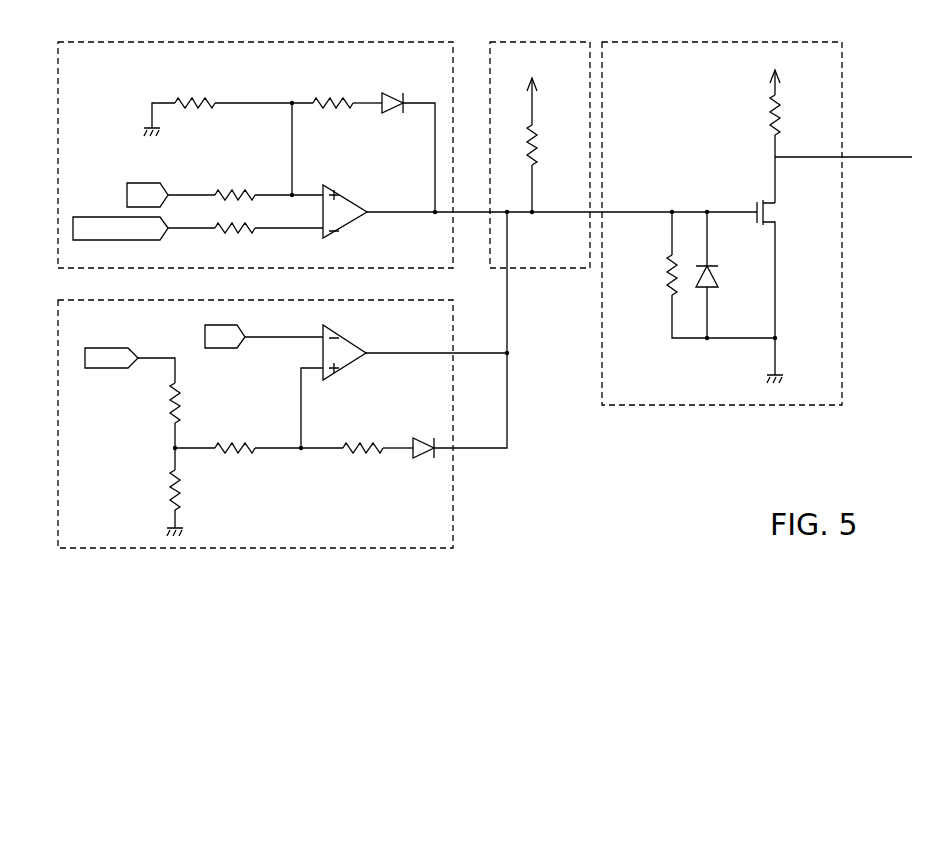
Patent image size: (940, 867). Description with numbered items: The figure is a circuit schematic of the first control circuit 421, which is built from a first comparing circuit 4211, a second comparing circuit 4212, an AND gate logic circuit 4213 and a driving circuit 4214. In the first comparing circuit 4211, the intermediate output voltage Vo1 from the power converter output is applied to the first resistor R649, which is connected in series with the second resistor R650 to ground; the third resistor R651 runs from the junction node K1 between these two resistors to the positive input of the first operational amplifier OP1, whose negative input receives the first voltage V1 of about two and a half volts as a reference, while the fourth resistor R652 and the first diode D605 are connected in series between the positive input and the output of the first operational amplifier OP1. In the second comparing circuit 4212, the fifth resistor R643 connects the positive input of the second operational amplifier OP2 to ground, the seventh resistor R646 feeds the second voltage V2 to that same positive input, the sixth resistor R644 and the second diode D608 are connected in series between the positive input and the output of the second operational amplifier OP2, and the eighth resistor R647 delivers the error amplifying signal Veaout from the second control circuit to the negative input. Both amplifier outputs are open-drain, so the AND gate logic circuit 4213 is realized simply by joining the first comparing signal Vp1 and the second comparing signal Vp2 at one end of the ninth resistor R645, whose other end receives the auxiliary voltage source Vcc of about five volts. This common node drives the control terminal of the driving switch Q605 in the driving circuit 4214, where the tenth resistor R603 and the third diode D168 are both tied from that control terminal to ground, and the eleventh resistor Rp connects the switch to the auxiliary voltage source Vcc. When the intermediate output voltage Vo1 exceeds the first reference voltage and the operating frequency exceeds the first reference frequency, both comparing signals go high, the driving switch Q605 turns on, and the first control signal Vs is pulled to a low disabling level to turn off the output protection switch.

The first control circuit 421 is at (916, 61).
The first comparing circuit 4211 is at (453, 517).
The second comparing circuit 4212 is at (258, 42).
The AND gate logic circuit 4213 is at (566, 42).
The driving circuit 4214 is at (723, 42).
The fifth resistor R643 is at (228, 106).
The sixth resistor R644 is at (347, 92).
The second diode D608 is at (403, 139).
The seventh resistor R646 is at (268, 184).
The eighth resistor R647 is at (268, 240).
The second operational amplifier OP2 is at (348, 198).
The second voltage V2 is at (171, 196).
The error amplifying signal Veaout is at (144, 228).
The second comparing signal Vp2 is at (468, 212).
The auxiliary voltage source Vcc is at (654, 86).
The ninth resistor R645 is at (558, 168).
The eleventh resistor Rp is at (789, 149).
The first control signal Vs is at (883, 157).
The driving switch Q605 is at (795, 291).
The tenth resistor R603 is at (696, 275).
The third diode D168 is at (734, 275).
The first voltage V1 is at (264, 337).
The intermediate output voltage Vo1 is at (130, 365).
The first resistor R649 is at (150, 415).
The second resistor R650 is at (151, 492).
The junction node K1 is at (175, 448).
The third resistor R651 is at (259, 462).
The fourth resistor R652 is at (376, 462).
The first diode D605 is at (453, 335).
The first operational amplifier OP1 is at (348, 338).
The first comparing signal Vp1 is at (507, 330).